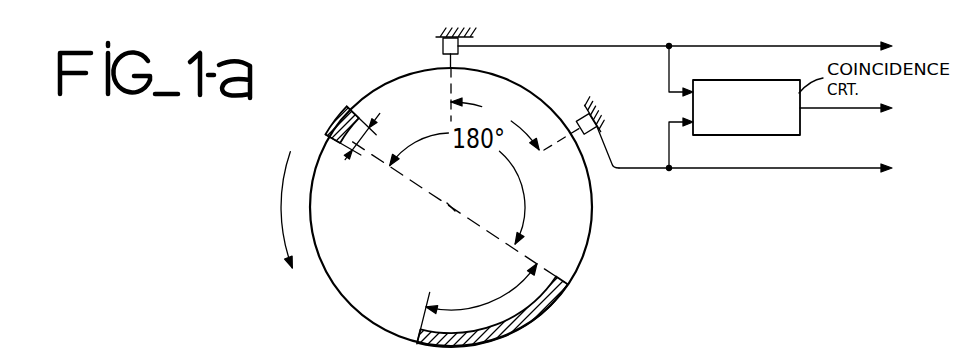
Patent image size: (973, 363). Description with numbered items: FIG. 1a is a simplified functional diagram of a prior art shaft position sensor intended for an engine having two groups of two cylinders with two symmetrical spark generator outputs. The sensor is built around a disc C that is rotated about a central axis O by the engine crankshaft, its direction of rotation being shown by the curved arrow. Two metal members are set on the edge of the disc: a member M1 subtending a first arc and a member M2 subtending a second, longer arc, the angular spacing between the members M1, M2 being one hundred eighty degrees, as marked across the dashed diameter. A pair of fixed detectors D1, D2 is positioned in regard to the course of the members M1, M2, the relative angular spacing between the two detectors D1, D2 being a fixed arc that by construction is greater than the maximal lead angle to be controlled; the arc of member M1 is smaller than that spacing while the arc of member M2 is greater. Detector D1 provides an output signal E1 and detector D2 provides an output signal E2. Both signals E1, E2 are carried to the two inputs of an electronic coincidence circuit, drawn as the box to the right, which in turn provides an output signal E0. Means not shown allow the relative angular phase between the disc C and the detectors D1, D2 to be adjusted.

The disc C is at (589, 253).
The central axis O is at (448, 207).
The metal member M1 is at (334, 121).
The metal member M2 is at (544, 311).
The fixed detector D1 is at (437, 43).
The fixed detector D2 is at (583, 114).
The output signal E1 is at (695, 57).
The output signal E2 is at (775, 150).
The output signal E0 is at (866, 109).